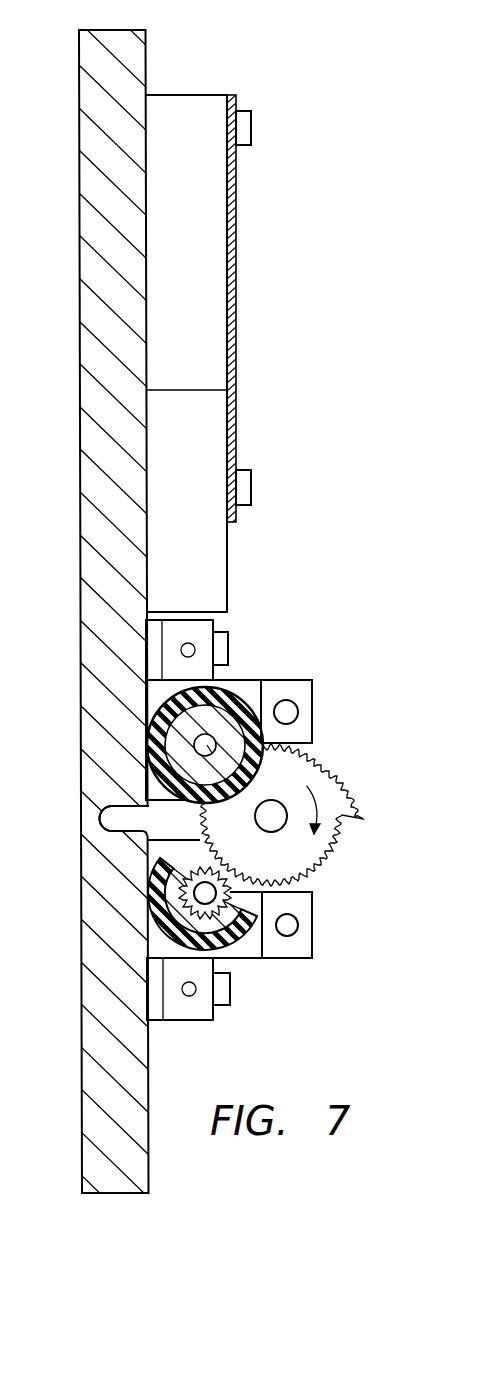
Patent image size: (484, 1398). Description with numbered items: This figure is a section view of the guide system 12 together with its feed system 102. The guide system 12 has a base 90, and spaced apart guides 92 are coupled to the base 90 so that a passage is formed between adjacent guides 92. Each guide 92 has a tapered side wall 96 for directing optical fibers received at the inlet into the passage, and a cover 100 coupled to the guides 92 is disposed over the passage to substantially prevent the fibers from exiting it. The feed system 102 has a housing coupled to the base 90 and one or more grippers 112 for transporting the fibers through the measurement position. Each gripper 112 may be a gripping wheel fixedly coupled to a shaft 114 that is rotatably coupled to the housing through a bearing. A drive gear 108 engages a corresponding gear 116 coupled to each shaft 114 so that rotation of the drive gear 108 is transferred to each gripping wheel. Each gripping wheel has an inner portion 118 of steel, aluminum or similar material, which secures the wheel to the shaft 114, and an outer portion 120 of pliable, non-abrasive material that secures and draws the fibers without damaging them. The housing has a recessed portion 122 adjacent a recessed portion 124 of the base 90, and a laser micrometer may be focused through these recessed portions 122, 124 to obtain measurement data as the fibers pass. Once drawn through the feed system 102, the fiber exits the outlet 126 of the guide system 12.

The guide system 12 is at (145, 35).
The base 90 is at (82, 1178).
The guide 92 is at (204, 95).
The tapered side wall 96 is at (210, 172).
The cover 100 is at (237, 255).
The feed system 102 is at (303, 619).
The drive gear 108 is at (337, 837).
The gripper 112 is at (220, 690).
The shaft 114 is at (225, 873).
The gear 116 is at (230, 893).
The inner portion 118 is at (228, 933).
The outer portion 120 is at (148, 960).
The recessed portion 122 is at (146, 826).
The recessed portion 124 is at (110, 823).
The outlet 126 is at (150, 690).